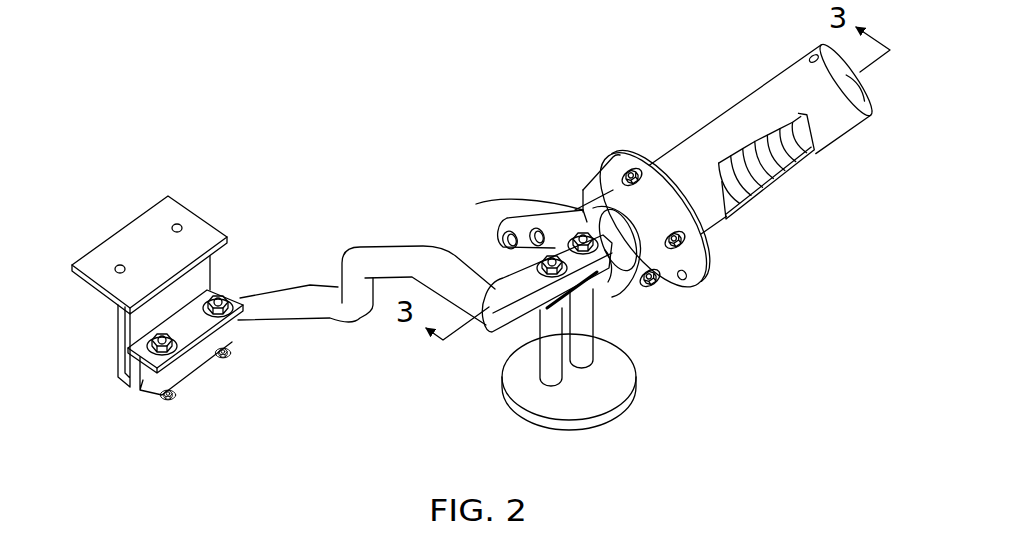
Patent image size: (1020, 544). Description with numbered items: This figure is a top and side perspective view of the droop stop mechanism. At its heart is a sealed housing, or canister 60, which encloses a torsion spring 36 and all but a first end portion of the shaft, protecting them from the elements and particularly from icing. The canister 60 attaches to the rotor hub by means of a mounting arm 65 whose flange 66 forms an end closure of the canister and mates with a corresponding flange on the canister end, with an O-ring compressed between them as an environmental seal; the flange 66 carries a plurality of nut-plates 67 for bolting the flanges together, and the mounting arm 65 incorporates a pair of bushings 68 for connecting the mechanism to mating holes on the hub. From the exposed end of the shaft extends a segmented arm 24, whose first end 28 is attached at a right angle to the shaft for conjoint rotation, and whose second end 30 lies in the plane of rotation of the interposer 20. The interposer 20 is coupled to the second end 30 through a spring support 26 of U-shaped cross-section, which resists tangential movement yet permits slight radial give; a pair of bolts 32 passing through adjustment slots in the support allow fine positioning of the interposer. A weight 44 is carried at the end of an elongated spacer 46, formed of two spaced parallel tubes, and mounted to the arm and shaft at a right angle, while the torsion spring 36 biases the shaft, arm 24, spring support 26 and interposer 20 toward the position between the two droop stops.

The interposer 20 is at (153, 208).
The segmented arm 24 is at (390, 257).
The spring support 26 is at (118, 340).
The first end 28 is at (598, 283).
The second end 30 is at (200, 363).
The bolts 32 is at (218, 300).
The torsion spring 36 is at (770, 163).
The weight 44 is at (615, 367).
The elongated spacer 46 is at (550, 363).
The canister 60 is at (767, 95).
The mounting arm 65 is at (562, 215).
The flange 66 is at (612, 157).
The nut-plates 67 is at (693, 248).
The bushings 68 is at (503, 220).